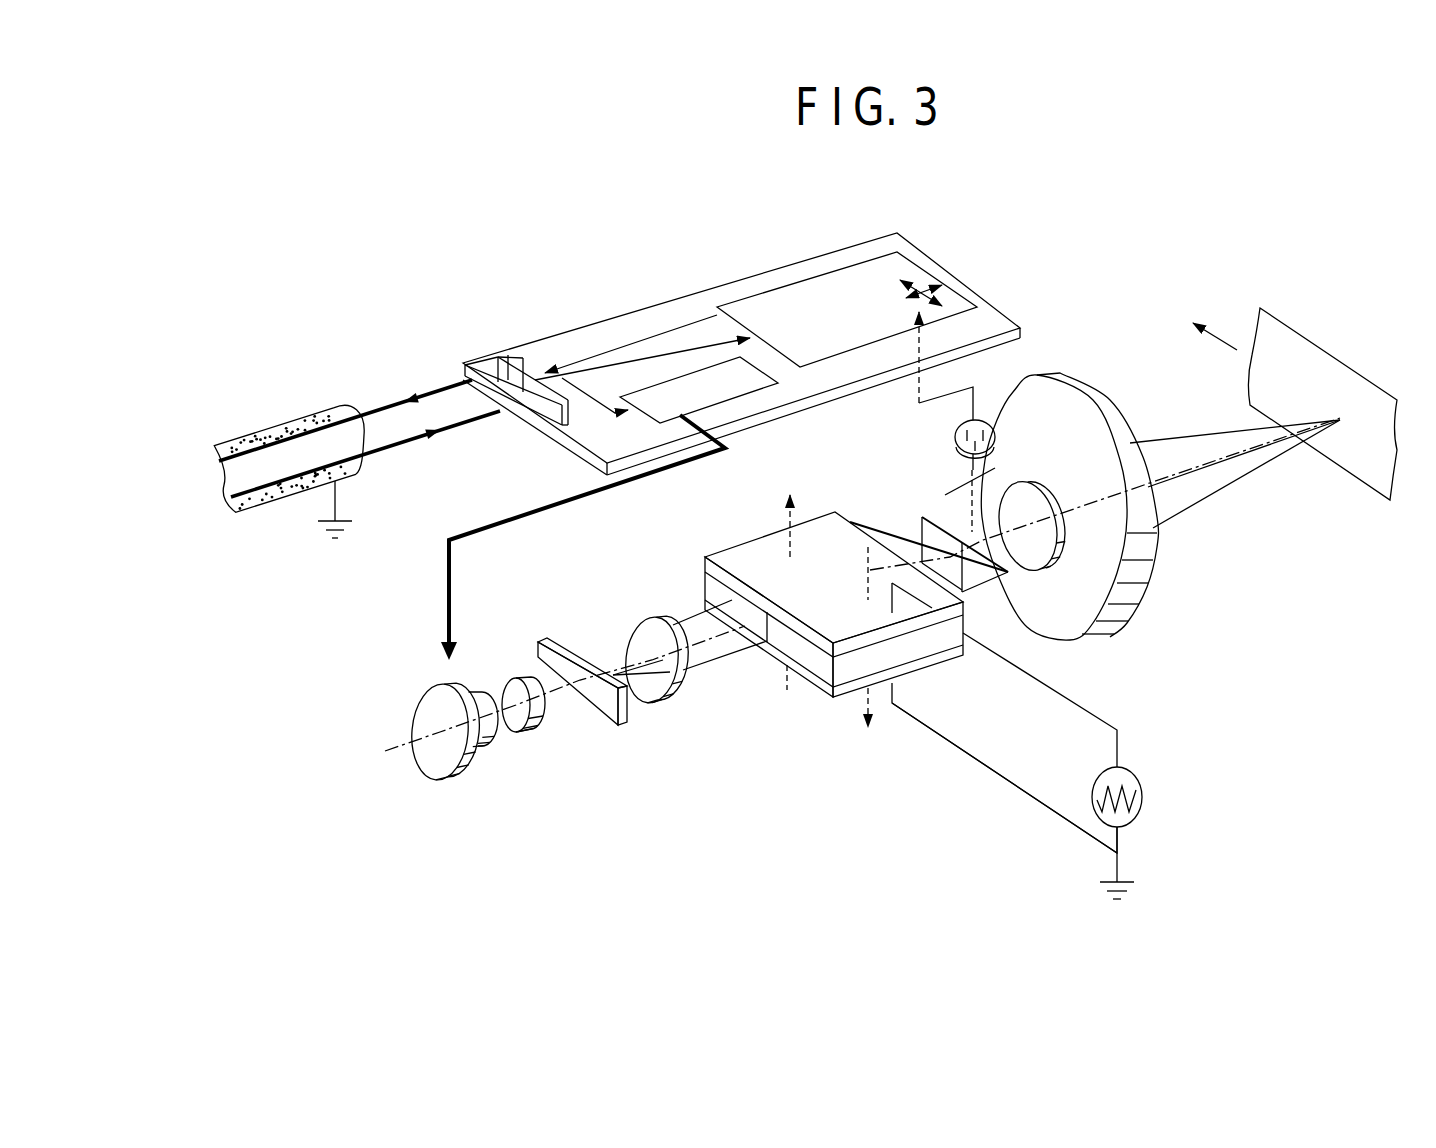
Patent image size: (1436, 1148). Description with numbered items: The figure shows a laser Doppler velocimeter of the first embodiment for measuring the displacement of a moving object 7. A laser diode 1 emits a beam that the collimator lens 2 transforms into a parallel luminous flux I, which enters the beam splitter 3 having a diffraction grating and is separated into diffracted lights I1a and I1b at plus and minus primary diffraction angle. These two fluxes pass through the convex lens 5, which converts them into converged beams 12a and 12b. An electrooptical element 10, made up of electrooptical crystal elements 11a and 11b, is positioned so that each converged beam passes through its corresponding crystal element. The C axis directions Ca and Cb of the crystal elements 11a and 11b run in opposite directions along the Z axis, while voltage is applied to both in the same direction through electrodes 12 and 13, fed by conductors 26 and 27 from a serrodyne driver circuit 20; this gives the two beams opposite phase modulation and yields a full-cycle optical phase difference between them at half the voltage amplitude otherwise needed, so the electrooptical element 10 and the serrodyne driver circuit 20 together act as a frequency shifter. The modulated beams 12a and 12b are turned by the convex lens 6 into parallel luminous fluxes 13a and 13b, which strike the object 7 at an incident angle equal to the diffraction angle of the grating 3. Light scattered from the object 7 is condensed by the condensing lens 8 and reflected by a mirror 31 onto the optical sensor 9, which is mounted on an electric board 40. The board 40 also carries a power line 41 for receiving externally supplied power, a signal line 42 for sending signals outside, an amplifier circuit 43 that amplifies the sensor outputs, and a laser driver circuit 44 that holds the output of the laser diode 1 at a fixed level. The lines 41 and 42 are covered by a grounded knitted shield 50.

The laser diode 1 is at (423, 694).
The collimator lens 2 is at (513, 687).
The beam splitter having a diffraction grating 3 is at (538, 652).
The convex lens 5 is at (632, 630).
The convex lens 6 is at (1150, 597).
The object to be measured 7 is at (1295, 404).
The condensing lens 8 is at (1088, 630).
The optical sensor 9 is at (953, 440).
The electrooptical element 10 is at (723, 548).
The electrooptical crystal element 11a is at (706, 583).
The electrooptical crystal element 11b is at (806, 665).
The electrode 12 is at (890, 640).
The converged beam 12a is at (900, 513).
The converged beam 12b is at (1023, 583).
The electrode 13 is at (845, 695).
The parallel luminous flux 13a is at (1184, 433).
The parallel luminous flux 13b is at (1220, 493).
The serrodyne driver circuit 20 is at (1135, 768).
The conductor 26 is at (1118, 728).
The conductor 27 is at (1031, 800).
The mirror 31 is at (980, 572).
The electric board 40 is at (824, 240).
The power line 41 is at (482, 415).
The signal line 42 is at (443, 388).
The amplifier circuit 43 is at (768, 300).
The laser driver circuit 44 is at (658, 392).
The grounded knitted shield 50 is at (296, 410).
The C axis direction Ca is at (820, 575).
The C axis direction Cb is at (876, 730).
The parallel luminous flux I is at (555, 690).
The diffracted light I1a is at (610, 672).
The diffracted light I1b is at (643, 695).